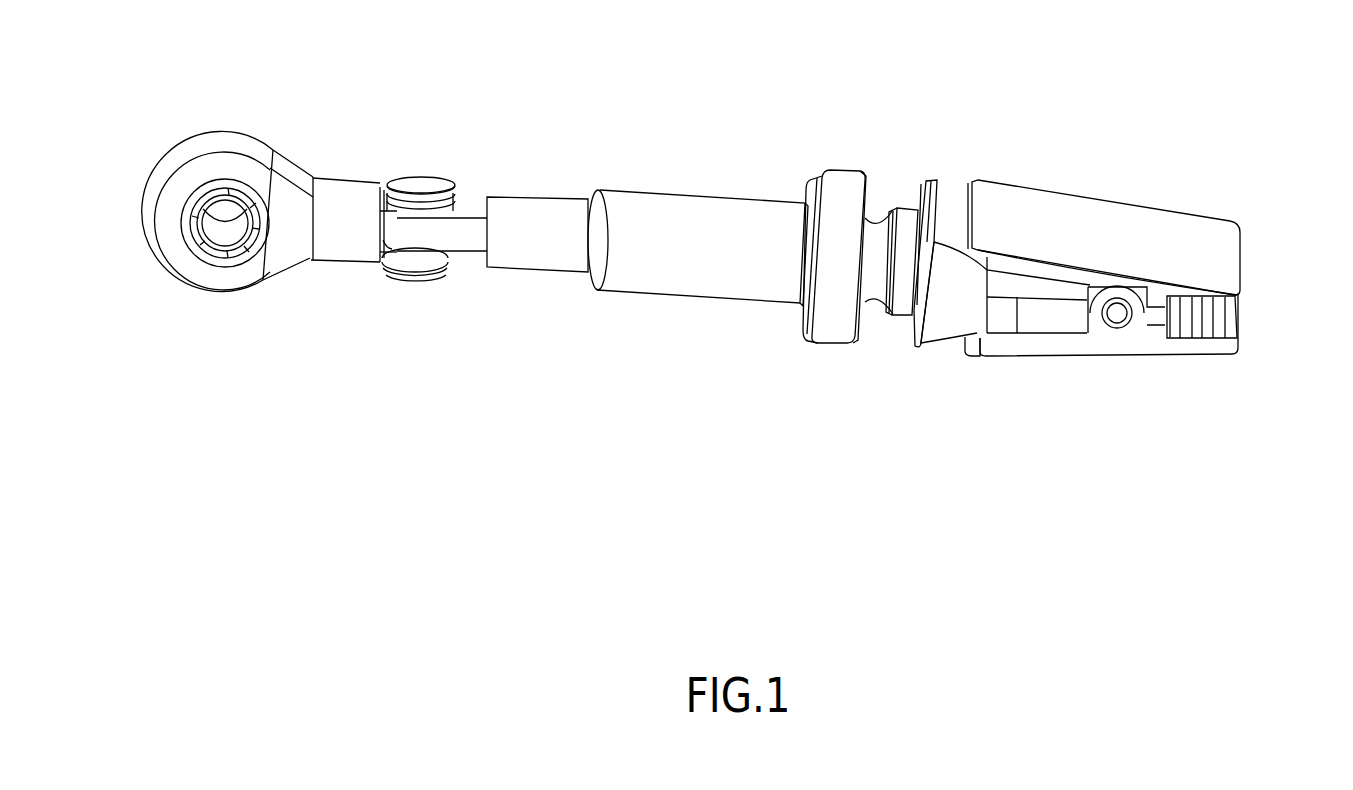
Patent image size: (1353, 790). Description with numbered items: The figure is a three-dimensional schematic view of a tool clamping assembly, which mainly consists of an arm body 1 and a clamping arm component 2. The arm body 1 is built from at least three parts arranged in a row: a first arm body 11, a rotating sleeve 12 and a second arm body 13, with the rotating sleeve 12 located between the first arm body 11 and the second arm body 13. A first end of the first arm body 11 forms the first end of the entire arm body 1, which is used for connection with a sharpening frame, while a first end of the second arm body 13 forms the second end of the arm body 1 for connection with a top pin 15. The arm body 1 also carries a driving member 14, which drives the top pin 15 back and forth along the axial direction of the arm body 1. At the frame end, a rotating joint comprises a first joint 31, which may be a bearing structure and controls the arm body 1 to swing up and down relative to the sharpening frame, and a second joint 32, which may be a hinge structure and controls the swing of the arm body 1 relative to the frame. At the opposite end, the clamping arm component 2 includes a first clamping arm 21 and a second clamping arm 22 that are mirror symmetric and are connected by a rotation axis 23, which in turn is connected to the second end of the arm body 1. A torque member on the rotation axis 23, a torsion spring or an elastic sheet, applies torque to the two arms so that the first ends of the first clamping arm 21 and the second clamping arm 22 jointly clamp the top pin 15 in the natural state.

The arm body 1 is at (942, 110).
The first arm body 11 is at (470, 205).
The rotating sleeve 12 is at (640, 207).
The second arm body 13 is at (812, 230).
The driving member 14 is at (873, 225).
The top pin 15 is at (957, 208).
The clamping arm component 2 is at (1272, 373).
The first clamping arm 21 is at (1185, 240).
The second clamping arm 22 is at (1193, 343).
The rotation axis 23 is at (1117, 313).
The first joint 31 is at (223, 140).
The second joint 32 is at (415, 187).